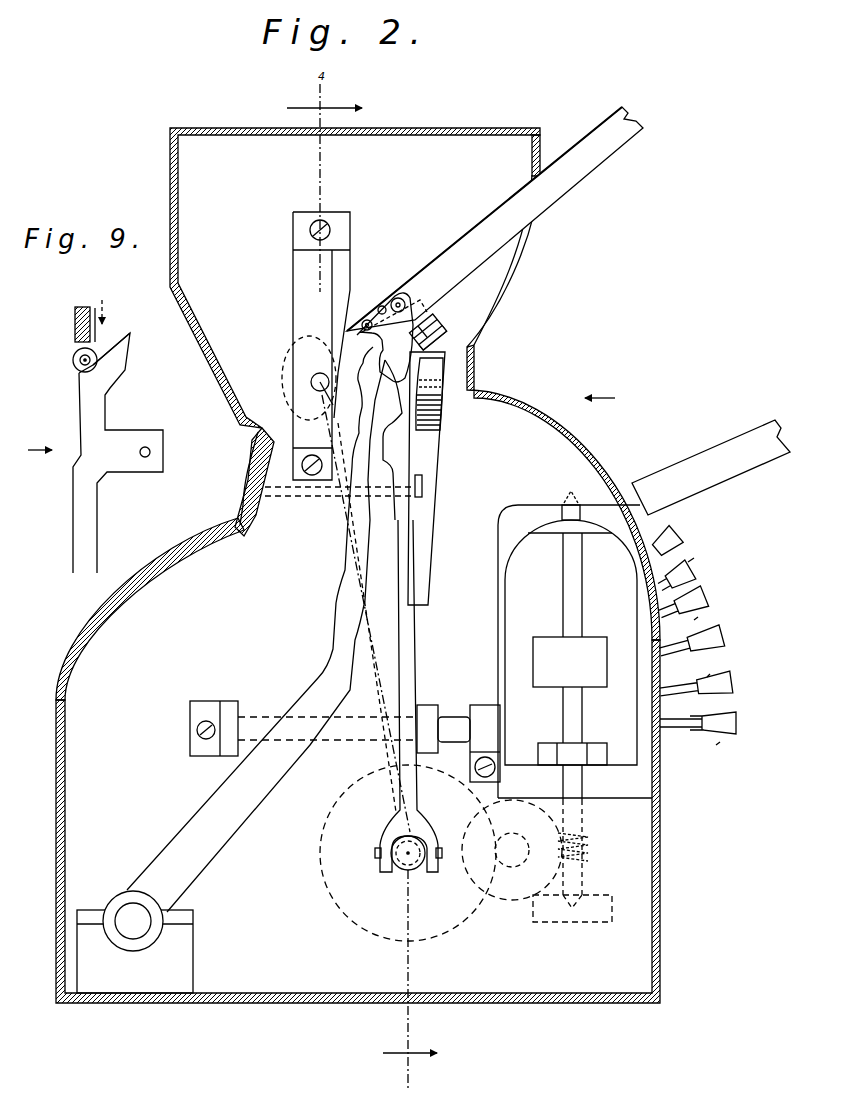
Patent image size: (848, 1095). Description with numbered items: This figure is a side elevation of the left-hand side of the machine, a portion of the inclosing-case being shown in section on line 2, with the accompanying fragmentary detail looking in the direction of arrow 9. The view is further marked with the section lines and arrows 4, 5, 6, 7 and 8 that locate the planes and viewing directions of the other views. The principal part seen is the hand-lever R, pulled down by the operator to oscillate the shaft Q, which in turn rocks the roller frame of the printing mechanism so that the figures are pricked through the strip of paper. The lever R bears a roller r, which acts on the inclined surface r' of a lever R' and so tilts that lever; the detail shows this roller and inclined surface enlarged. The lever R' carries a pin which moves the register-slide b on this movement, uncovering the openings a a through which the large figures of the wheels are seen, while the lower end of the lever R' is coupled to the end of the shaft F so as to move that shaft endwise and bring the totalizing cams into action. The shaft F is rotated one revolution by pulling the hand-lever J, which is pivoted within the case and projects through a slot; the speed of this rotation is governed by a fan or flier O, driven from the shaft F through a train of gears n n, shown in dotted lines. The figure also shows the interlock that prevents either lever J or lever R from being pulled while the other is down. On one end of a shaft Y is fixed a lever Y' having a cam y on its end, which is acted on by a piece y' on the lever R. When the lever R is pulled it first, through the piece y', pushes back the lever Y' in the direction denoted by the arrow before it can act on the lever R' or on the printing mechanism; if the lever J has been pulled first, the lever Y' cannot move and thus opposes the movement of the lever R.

In FIG. 2, the hand-lever R is at (495, 219).
In FIG. 9, the hand-lever R is at (69, 324).
In FIG. 2, the roller r is at (432, 332).
In FIG. 9, the roller r is at (76, 360).
In FIG. 2, the inclined surface r' is at (429, 394).
In FIG. 9, the inclined surface r' is at (111, 357).
In FIG. 2, the lever R' is at (410, 612).
In FIG. 9, the lever R' is at (102, 453).
In FIG. 2, the oscillating shaft Q is at (310, 381).
In FIG. 2, the piece y' is at (392, 337).
In FIG. 2, the cam y is at (375, 433).
In FIG. 2, the lever Y' is at (256, 636).
In FIG. 2, the shaft Y is at (135, 942).
In FIG. 2, the register-slide b is at (250, 482).
In FIG. 2, the section line 2 is at (600, 389).
In FIG. 2, the hand-lever J is at (711, 467).
In FIG. 2, the fan or flier O is at (575, 645).
In FIG. 2, the section line and arrows 4 is at (668, 541).
In FIG. 2, the arrow 5 is at (683, 578).
In FIG. 2, the section line 6 is at (691, 605).
In FIG. 2, the section line 7 is at (701, 644).
In FIG. 2, the section line 8 is at (705, 687).
In FIG. 2, the arrow 9 is at (707, 723).
In FIG. 2, the opening a is at (704, 654).
In FIG. 2, the shaft F is at (410, 870).
In FIG. 2, the train of gears n is at (466, 853).